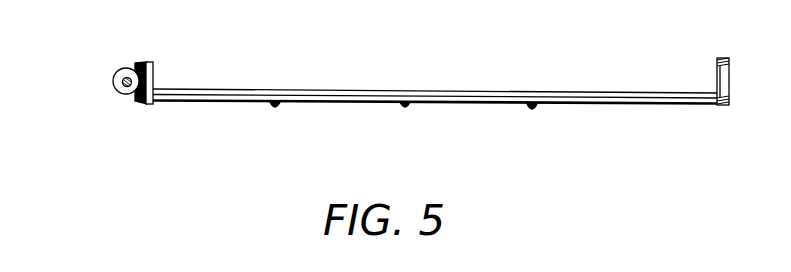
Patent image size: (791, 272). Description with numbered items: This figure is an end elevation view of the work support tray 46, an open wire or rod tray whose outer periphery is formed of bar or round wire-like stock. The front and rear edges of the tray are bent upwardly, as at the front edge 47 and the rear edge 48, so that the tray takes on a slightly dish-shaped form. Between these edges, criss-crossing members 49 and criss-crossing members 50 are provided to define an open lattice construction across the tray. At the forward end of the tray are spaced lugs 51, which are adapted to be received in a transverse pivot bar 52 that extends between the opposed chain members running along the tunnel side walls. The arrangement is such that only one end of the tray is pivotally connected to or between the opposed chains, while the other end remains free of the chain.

The tray 46 is at (452, 93).
The upwardly bent front edge 47 is at (154, 66).
The upwardly bent rear edge 48 is at (716, 73).
The criss-crossing members 49 is at (404, 110).
The criss-crossing members 50 is at (345, 97).
The spaced lugs 51 is at (113, 79).
The transverse pivot bar 52 is at (125, 85).